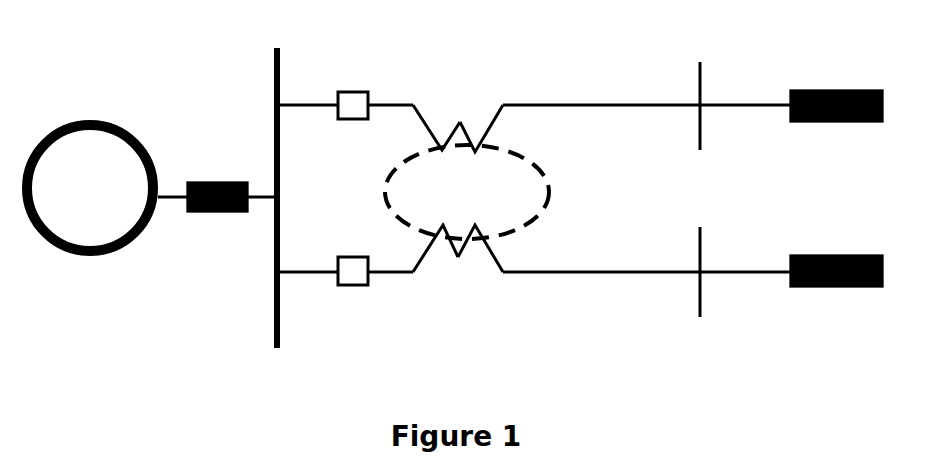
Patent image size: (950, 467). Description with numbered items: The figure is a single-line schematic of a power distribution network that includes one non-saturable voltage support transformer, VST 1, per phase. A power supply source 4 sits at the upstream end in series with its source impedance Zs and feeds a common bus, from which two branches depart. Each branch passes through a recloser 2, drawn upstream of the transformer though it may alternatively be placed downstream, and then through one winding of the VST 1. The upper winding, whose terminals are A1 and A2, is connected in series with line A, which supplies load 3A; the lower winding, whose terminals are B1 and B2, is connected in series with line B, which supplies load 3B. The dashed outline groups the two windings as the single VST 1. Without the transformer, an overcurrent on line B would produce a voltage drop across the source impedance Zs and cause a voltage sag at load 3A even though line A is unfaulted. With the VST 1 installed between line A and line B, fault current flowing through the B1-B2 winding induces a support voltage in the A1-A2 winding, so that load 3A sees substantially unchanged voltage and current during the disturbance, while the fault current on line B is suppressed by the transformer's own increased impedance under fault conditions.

The voltage support transformer 1 is at (467, 192).
The recloser 2 is at (347, 76).
The load 3A is at (826, 80).
The load 3B is at (827, 245).
The power supply source 4 is at (90, 188).
The source impedance Zs is at (217, 178).
The line A is at (650, 98).
The line B is at (666, 282).
The winding terminal A1 is at (422, 96).
The winding terminal A2 is at (492, 96).
The winding terminal B1 is at (420, 282).
The winding terminal B2 is at (492, 284).